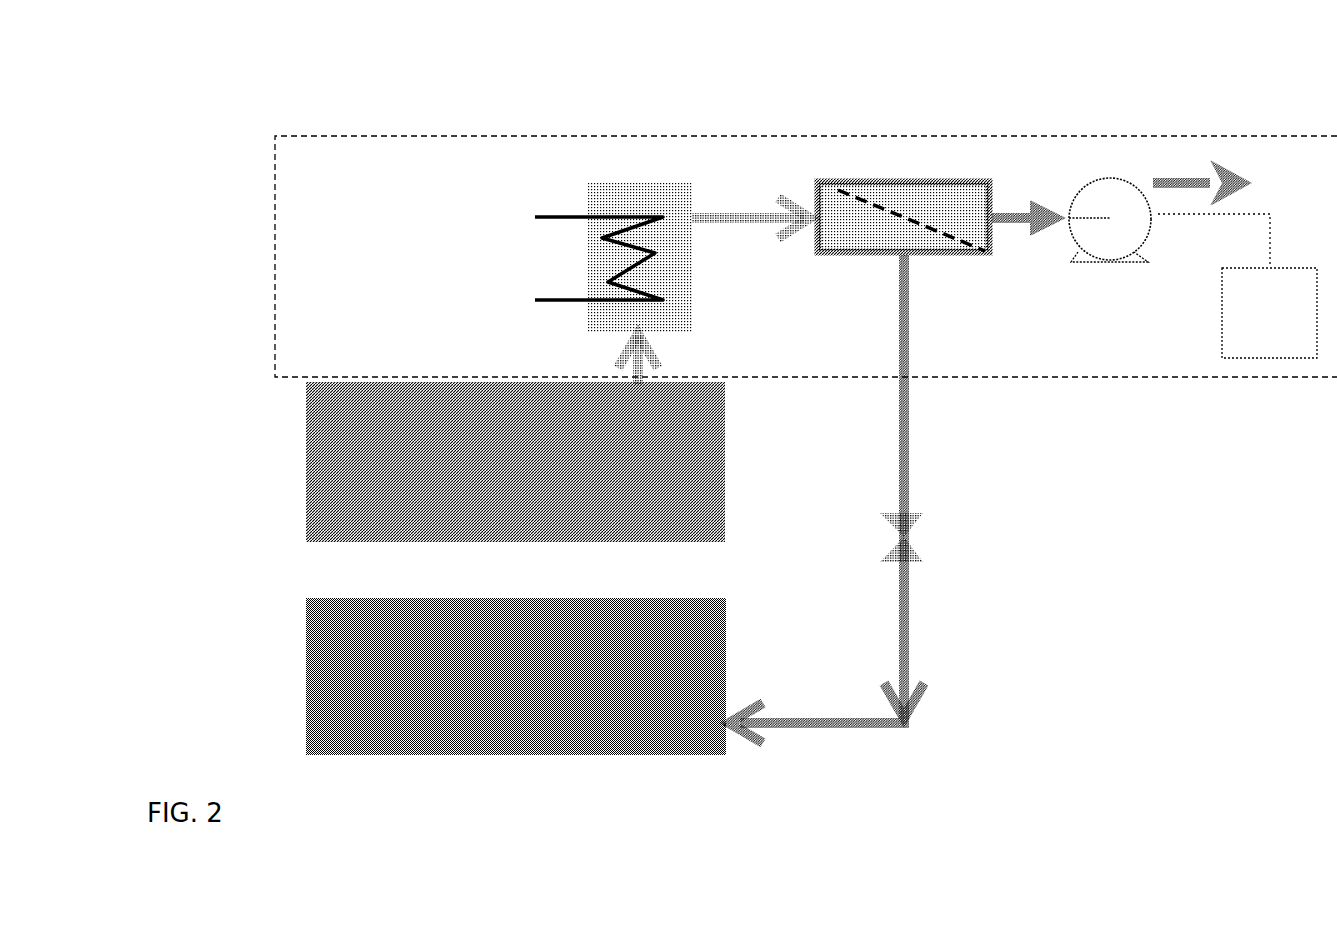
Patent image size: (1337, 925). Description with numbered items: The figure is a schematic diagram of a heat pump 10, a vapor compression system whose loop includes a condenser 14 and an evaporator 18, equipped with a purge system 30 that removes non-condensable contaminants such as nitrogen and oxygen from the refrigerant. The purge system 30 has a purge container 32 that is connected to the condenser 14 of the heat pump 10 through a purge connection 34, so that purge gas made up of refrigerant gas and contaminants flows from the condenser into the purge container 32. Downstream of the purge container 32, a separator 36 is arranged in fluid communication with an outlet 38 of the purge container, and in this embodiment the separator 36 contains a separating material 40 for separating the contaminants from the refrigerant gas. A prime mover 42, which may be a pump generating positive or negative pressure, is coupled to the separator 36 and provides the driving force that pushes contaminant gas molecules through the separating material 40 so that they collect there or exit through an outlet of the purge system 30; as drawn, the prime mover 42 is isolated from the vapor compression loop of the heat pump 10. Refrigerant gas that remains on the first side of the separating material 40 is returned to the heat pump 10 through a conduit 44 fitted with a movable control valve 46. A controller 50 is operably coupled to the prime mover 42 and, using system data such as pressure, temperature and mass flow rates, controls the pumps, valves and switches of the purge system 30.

The heat pump 10 is at (762, 393).
The condenser 14 is at (305, 448).
The evaporator 18 is at (305, 687).
The purge system 30 is at (470, 145).
The purge container 32 is at (692, 270).
The purge connection 34 is at (623, 349).
The separator 36 is at (843, 188).
The outlet 38 is at (700, 198).
The separating material 40 is at (850, 184).
The prime mover 42 is at (1104, 215).
The conduit 44 is at (908, 408).
The control valve 46 is at (915, 556).
The controller 50 is at (1237, 286).